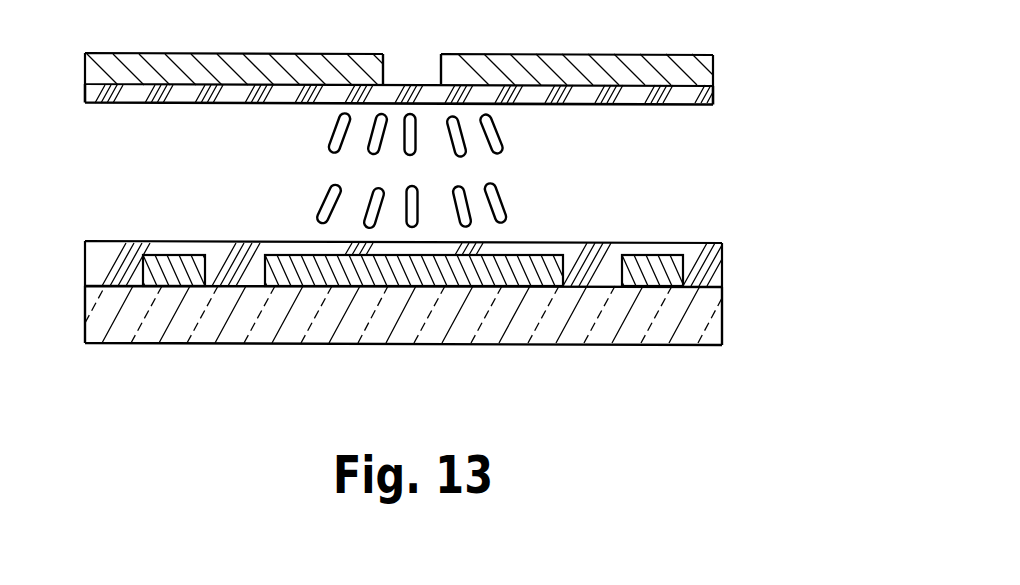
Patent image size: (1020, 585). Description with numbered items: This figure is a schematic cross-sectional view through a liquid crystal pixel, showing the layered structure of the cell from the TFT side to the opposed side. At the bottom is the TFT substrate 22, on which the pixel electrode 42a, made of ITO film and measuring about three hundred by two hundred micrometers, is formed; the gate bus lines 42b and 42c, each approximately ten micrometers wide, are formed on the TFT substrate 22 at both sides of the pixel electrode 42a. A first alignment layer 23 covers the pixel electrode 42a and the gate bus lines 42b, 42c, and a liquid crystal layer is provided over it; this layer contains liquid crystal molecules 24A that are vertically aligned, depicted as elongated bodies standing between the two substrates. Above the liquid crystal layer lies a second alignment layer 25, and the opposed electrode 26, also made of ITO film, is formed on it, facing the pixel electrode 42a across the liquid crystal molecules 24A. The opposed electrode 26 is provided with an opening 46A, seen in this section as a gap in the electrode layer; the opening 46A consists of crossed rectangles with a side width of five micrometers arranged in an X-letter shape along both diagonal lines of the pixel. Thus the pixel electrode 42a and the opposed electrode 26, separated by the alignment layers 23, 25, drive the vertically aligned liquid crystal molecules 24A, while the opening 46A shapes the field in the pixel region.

The TFT substrate 22 is at (723, 318).
The first alignment layer 23 is at (722, 250).
The liquid crystal molecules 24A is at (497, 213).
The second alignment layer 25 is at (715, 97).
The opposed electrode 26 is at (713, 62).
The pixel electrode 42a is at (533, 283).
The gate bus line 42b is at (167, 279).
The gate bus line 42c is at (657, 283).
The opening 46A is at (441, 52).